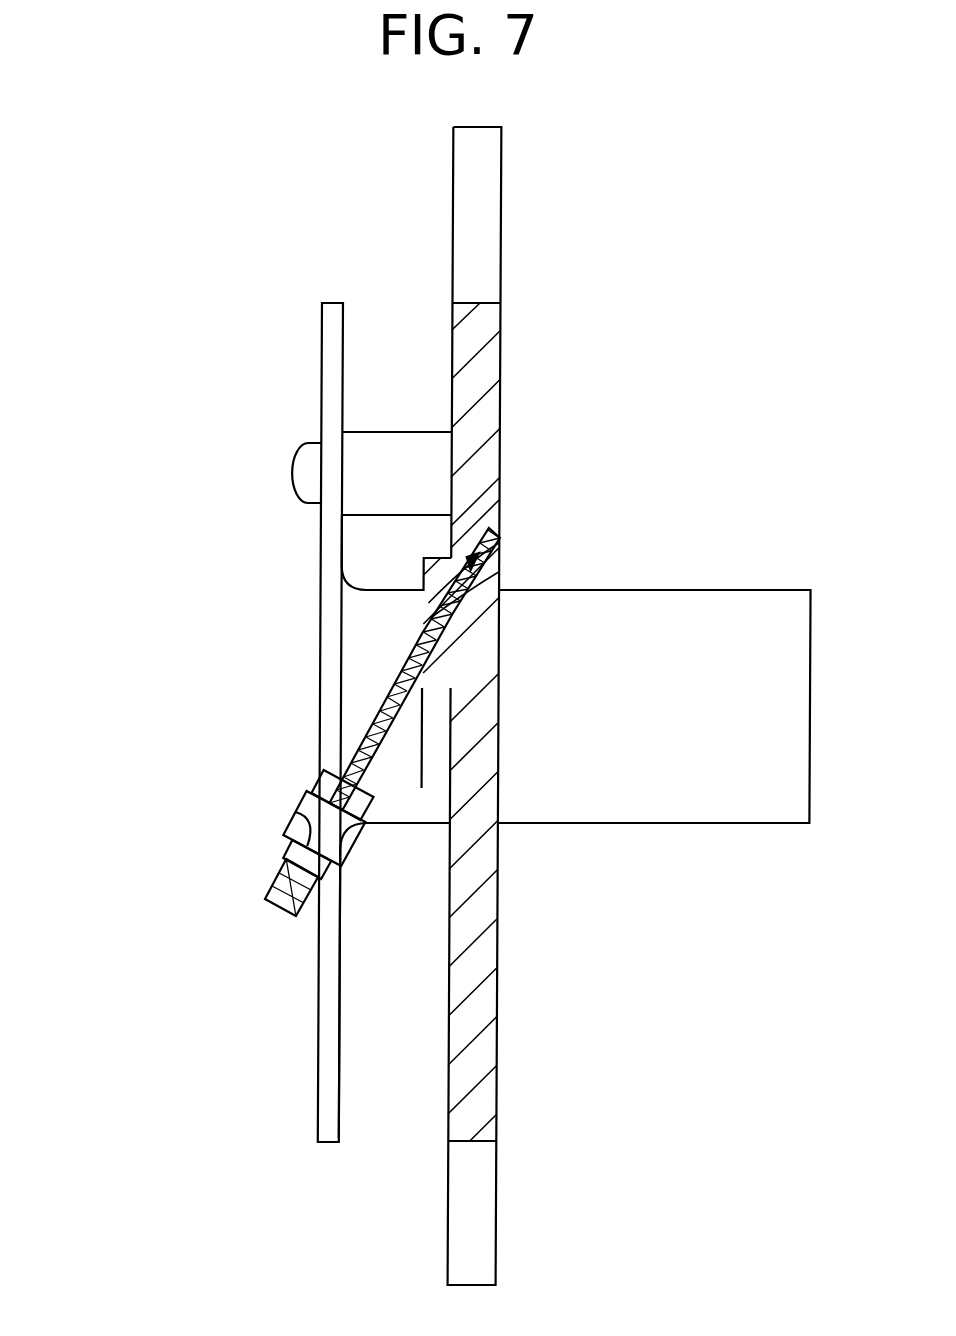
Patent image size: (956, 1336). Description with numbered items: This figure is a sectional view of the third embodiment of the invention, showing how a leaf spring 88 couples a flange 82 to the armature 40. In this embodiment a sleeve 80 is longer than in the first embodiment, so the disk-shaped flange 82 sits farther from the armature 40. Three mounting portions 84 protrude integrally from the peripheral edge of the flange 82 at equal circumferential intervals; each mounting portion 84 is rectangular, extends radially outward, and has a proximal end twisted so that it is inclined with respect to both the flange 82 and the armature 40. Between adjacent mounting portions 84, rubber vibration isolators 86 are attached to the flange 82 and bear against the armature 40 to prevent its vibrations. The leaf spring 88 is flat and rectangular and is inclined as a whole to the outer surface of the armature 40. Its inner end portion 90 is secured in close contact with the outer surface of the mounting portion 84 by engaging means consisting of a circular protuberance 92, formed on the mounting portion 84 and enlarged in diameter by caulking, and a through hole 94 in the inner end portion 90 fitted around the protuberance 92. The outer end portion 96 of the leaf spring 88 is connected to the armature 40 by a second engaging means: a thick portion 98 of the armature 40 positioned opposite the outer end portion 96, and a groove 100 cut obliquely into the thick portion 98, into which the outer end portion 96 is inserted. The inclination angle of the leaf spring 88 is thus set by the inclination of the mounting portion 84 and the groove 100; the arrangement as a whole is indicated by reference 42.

The armature 40 is at (484, 372).
The clamp assembly 42 is at (189, 536).
The sleeve 80 is at (663, 800).
The flange 82 is at (332, 372).
The mounting portion 84 is at (300, 906).
The rubber vibration isolator 86 is at (372, 462).
The leaf spring 88 is at (372, 712).
The inner end portion 90 is at (272, 888).
The circular protuberance 92 is at (318, 790).
The through hole 94 is at (316, 830).
The outer end portion 96 is at (498, 578).
The thick portion 98 is at (428, 603).
The groove 100 is at (470, 547).